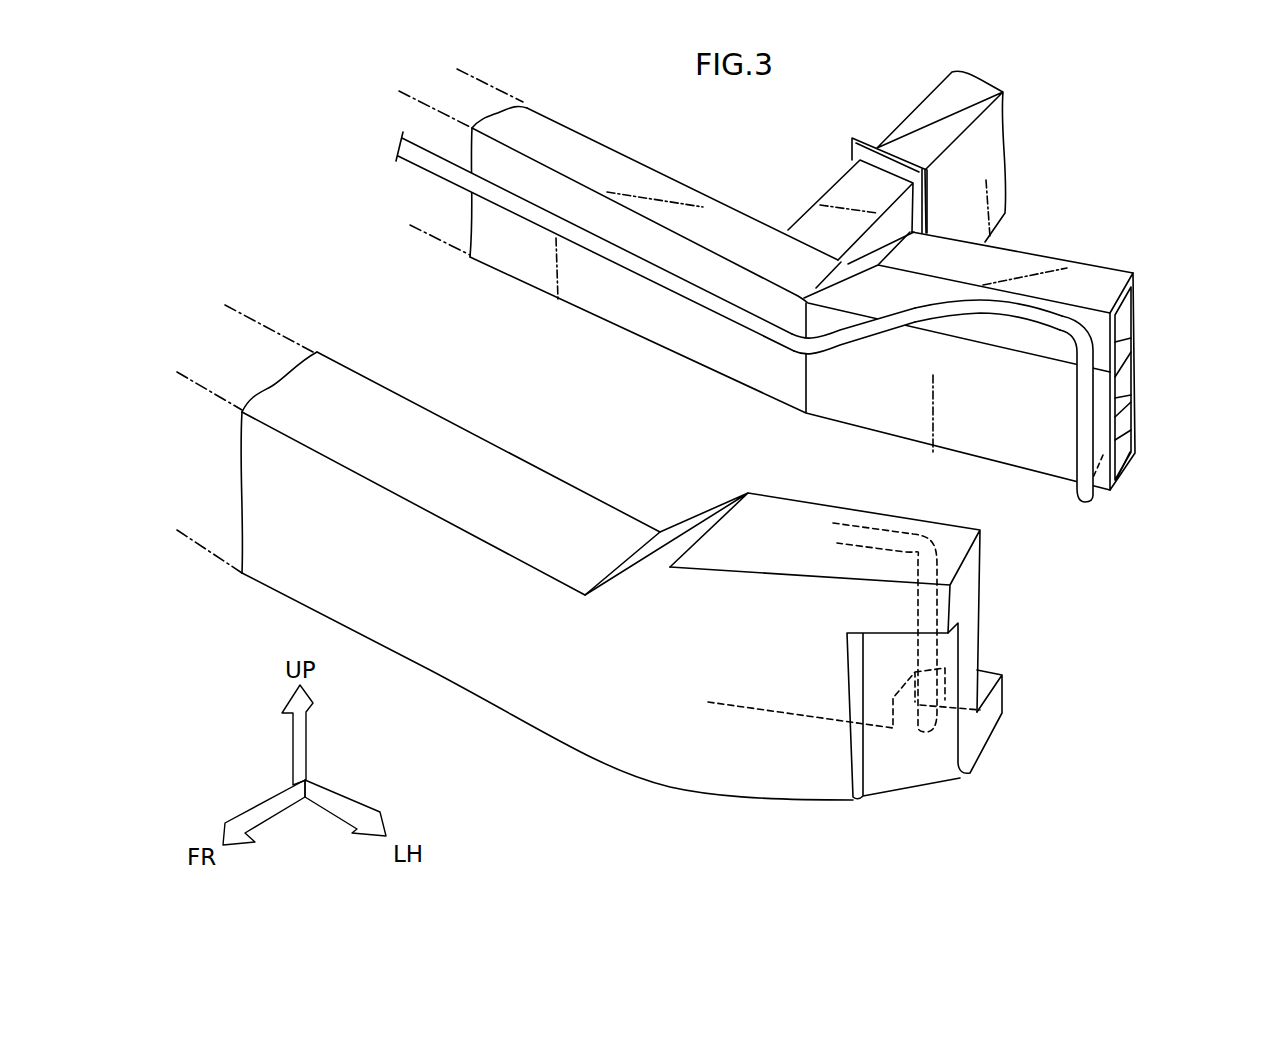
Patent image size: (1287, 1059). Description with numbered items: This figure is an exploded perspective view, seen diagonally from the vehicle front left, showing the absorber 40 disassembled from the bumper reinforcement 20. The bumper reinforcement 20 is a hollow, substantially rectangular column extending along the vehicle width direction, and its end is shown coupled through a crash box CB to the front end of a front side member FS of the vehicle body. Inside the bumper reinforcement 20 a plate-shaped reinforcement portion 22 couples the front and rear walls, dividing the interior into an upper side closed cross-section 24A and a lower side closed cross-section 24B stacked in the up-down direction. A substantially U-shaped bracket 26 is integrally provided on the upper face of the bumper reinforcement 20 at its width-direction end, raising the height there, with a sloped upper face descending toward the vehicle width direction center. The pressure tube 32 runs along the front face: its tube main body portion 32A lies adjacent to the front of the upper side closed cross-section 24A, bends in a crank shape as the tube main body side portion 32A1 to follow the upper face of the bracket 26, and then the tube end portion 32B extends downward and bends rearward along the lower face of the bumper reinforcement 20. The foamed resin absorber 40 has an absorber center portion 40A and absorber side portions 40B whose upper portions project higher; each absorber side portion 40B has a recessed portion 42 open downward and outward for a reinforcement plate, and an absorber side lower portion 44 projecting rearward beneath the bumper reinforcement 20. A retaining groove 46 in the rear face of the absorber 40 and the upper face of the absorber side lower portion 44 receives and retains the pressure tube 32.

The bumper reinforcement 20 is at (1137, 362).
The reinforcement portion 22 is at (1120, 397).
The upper side closed cross-section 24A is at (1125, 377).
The lower side closed cross-section 24B is at (1123, 428).
The bracket 26 is at (1017, 257).
The pressure tube 32 is at (422, 176).
The tube main body portion 32A is at (613, 263).
The tube main body side portion 32A1 is at (1007, 317).
The tube end portion 32B is at (1077, 432).
The absorber 40 is at (267, 587).
The absorber center portion 40A is at (480, 470).
The absorber side portion 40B is at (660, 757).
The recessed portion 42 is at (913, 770).
The absorber side lower portion 44 is at (1003, 690).
The retaining groove 46 is at (930, 728).
The front side member FS is at (918, 122).
The crash box CB is at (806, 214).